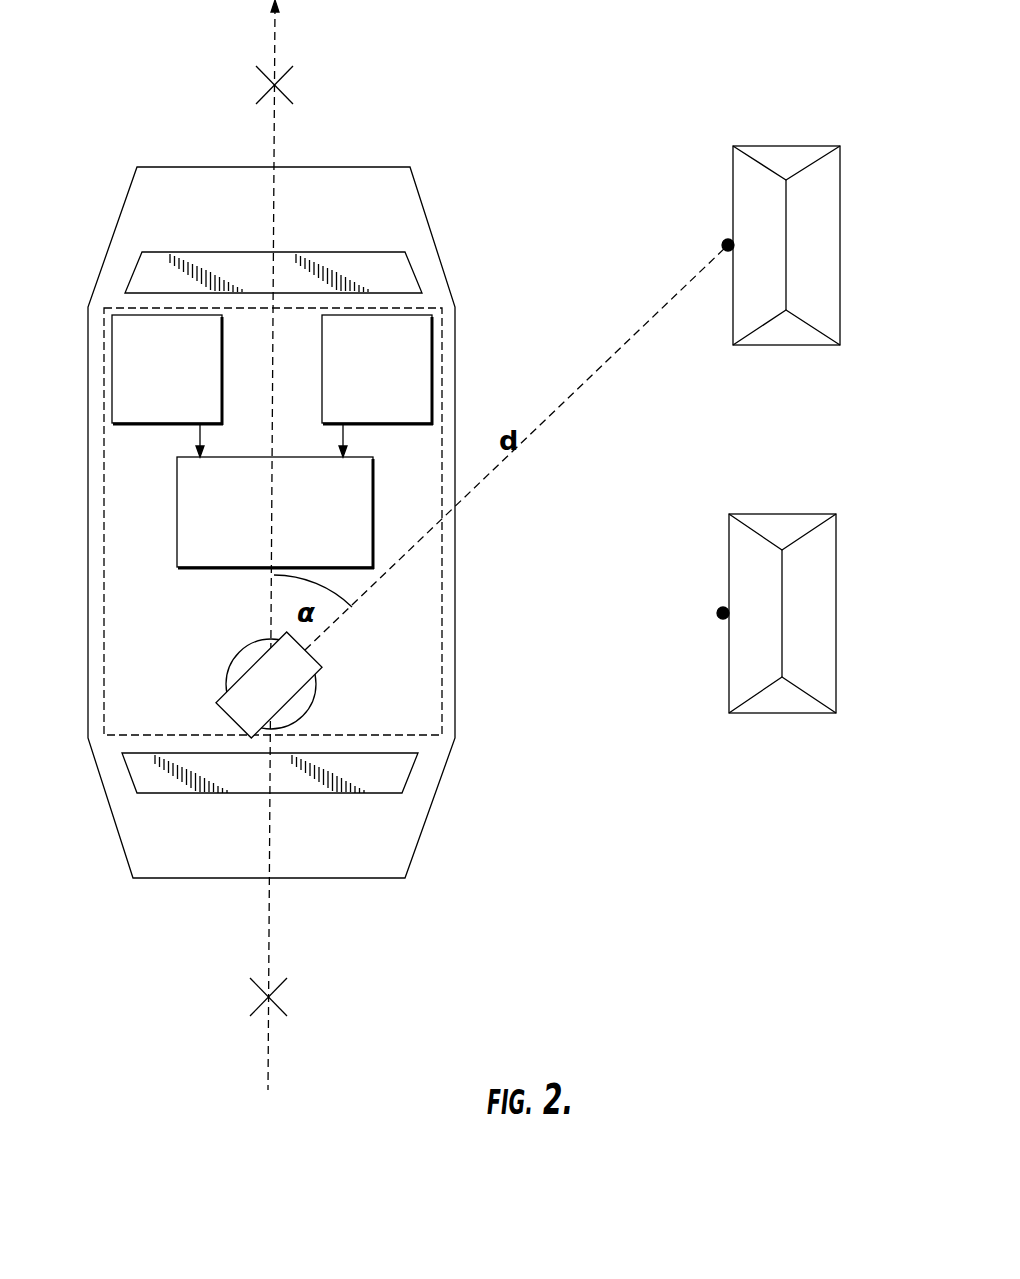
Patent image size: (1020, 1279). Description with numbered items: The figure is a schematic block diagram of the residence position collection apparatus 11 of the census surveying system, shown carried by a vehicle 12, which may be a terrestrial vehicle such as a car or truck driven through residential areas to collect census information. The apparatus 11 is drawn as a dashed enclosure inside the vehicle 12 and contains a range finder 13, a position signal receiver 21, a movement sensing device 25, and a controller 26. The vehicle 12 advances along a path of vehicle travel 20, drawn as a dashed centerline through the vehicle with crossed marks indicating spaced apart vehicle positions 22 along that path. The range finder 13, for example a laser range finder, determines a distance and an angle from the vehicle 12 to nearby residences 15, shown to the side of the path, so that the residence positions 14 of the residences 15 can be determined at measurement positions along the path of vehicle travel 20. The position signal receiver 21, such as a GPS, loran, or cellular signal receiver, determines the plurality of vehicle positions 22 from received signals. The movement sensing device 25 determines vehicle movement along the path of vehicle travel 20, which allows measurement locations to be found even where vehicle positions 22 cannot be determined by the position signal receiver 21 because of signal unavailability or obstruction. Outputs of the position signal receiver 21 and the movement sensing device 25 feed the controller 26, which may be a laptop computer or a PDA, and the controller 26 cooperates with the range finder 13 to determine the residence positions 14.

The residence position collection apparatus 11 is at (101, 508).
The vehicle 12 is at (122, 845).
The range finder 13 is at (316, 673).
The residence position 14 is at (722, 245).
The residence 15 is at (840, 258).
The path of vehicle travel 20 is at (275, 30).
The position signal receiver 21 is at (432, 322).
The vehicle position 22 is at (260, 73).
The movement sensing device 25 is at (112, 361).
The controller 26 is at (177, 547).